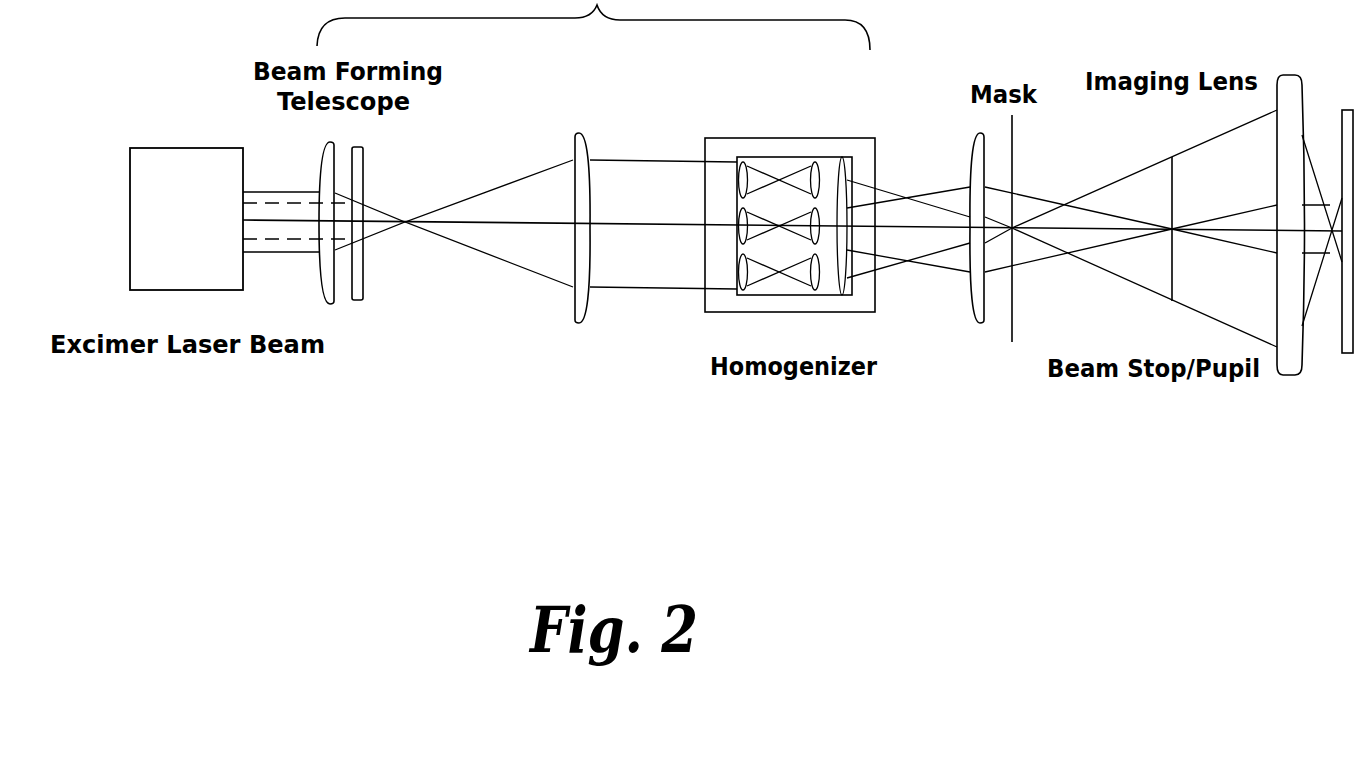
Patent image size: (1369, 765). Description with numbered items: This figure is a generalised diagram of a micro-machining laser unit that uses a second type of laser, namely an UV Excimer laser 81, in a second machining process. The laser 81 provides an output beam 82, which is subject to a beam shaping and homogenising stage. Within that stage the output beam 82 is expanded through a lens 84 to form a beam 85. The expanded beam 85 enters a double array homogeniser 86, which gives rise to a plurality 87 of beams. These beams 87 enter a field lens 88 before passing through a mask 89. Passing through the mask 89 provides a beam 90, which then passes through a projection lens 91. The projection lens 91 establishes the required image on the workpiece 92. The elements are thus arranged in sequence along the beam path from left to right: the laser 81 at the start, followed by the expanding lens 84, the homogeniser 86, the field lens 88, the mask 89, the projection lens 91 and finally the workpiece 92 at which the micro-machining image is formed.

The UV Excimer laser 81 is at (206, 233).
The output beam 82 is at (280, 197).
The lens 84 is at (336, 296).
The beam 85 is at (645, 273).
The double array homogeniser 86 is at (763, 294).
The plurality of beams 87 is at (887, 183).
The field lens 88 is at (975, 313).
The mask 89 is at (1012, 342).
The beam 90 is at (1193, 315).
The projection lens 91 is at (1287, 377).
The workpiece 92 is at (1351, 353).